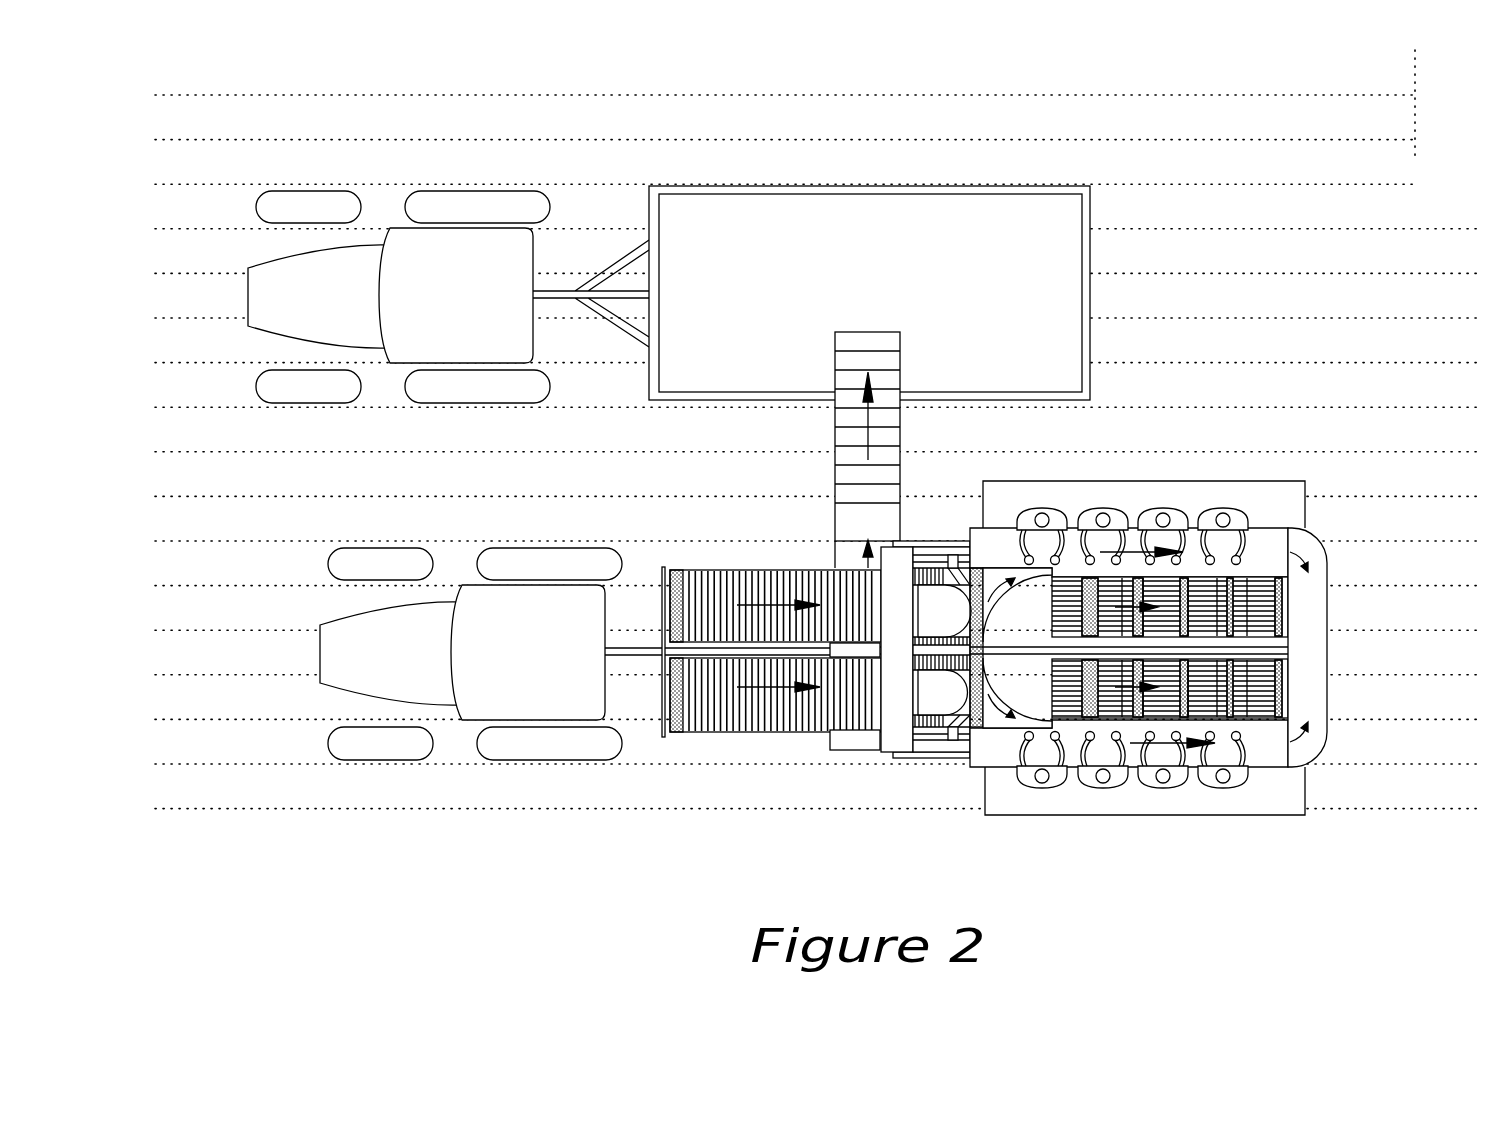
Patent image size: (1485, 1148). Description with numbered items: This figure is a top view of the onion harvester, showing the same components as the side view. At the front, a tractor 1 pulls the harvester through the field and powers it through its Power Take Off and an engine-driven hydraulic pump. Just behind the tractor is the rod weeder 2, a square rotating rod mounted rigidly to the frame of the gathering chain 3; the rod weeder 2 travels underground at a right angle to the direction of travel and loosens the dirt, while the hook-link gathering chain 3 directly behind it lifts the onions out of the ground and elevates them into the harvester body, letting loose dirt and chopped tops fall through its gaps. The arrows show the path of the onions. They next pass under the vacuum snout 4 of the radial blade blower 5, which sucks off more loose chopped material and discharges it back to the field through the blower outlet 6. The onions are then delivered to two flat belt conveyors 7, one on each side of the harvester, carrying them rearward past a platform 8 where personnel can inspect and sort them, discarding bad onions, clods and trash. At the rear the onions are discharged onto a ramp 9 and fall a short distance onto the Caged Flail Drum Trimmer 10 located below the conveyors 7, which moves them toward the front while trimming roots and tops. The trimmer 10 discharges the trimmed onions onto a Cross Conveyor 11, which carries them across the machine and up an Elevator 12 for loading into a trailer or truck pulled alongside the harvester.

The tractor 1 is at (347, 693).
The rod weeder 2 is at (663, 733).
The gathering chain 3 is at (738, 732).
The vacuum snout 4 is at (957, 557).
The radial blade blower 5 is at (897, 582).
The blower outlet 6 is at (905, 543).
The flat belt conveyors 7 is at (990, 545).
The platform 8 is at (1098, 498).
The ramp 9 is at (1313, 692).
The Caged Flail Drum Trimmer 10 is at (1265, 687).
The Cross Conveyor 11 is at (853, 557).
The Elevator 12 is at (835, 473).